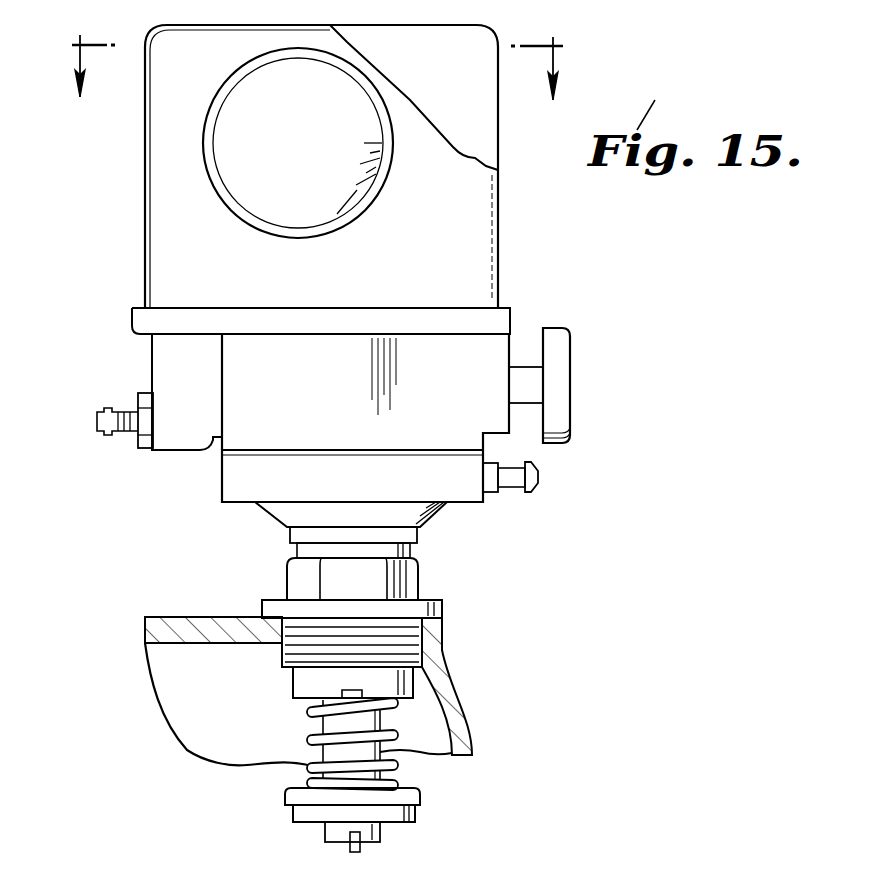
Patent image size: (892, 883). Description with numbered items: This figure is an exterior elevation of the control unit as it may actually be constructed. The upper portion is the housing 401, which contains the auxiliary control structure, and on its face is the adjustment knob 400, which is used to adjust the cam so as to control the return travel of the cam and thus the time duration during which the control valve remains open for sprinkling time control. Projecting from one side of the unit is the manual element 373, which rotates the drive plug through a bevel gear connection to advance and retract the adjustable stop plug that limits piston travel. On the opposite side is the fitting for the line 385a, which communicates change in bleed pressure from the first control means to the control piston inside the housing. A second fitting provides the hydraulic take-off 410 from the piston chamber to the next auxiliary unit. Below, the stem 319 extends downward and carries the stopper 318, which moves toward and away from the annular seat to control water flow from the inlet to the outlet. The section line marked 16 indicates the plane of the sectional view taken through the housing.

The section line 16- 16 is at (314, 67).
The housing 401 is at (430, 40).
The adjustment knob 400 is at (298, 143).
The line 385a is at (123, 410).
The manual element 373 is at (562, 368).
The hydraulic take-off 410 is at (517, 478).
The stem 319 is at (363, 717).
The stopper 318 is at (298, 812).